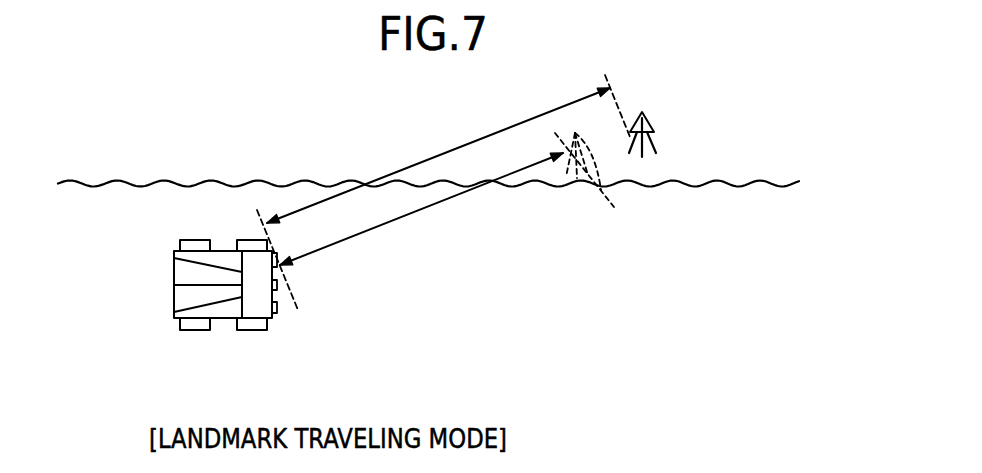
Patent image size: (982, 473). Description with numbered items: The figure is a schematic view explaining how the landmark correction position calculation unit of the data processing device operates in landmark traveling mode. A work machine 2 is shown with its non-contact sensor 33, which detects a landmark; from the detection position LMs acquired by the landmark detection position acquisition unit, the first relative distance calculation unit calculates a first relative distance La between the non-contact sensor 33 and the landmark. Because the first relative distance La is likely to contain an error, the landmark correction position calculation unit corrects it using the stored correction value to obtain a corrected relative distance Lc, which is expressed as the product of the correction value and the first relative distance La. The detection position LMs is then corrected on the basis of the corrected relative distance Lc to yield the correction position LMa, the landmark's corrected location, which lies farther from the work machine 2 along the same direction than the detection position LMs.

The work machine 2 is at (226, 250).
The non-contact sensor 33 is at (280, 289).
The corrected relative distance Lc is at (438, 155).
The first relative distance La is at (421, 209).
The correction position LMa is at (655, 122).
The detection position LMs is at (611, 185).